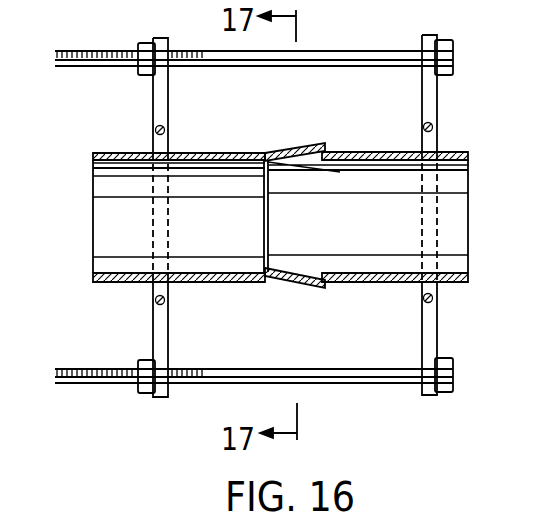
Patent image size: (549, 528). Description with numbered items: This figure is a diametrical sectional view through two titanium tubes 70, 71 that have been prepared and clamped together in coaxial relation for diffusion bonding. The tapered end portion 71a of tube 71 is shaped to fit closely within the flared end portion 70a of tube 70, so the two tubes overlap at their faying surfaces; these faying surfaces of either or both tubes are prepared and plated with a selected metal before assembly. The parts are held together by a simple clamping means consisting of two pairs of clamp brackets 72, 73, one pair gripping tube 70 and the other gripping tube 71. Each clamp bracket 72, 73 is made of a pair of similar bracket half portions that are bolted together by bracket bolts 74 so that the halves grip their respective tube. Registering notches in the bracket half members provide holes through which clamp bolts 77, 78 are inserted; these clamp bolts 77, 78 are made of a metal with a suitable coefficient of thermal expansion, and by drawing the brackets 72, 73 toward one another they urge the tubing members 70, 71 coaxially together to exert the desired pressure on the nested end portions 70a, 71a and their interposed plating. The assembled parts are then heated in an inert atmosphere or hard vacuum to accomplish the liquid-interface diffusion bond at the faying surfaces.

The titanium tube 70 is at (98, 283).
The end portion 70a is at (313, 287).
The titanium tube 71 is at (467, 283).
The bell end of second pipe section 71a is at (291, 272).
The clamp bracket 72 is at (159, 38).
The clamp bracket 73 is at (427, 35).
The bracket bolt 74 is at (163, 127).
The clamp bolt 77 is at (352, 383).
The clamp bolt 78 is at (365, 51).